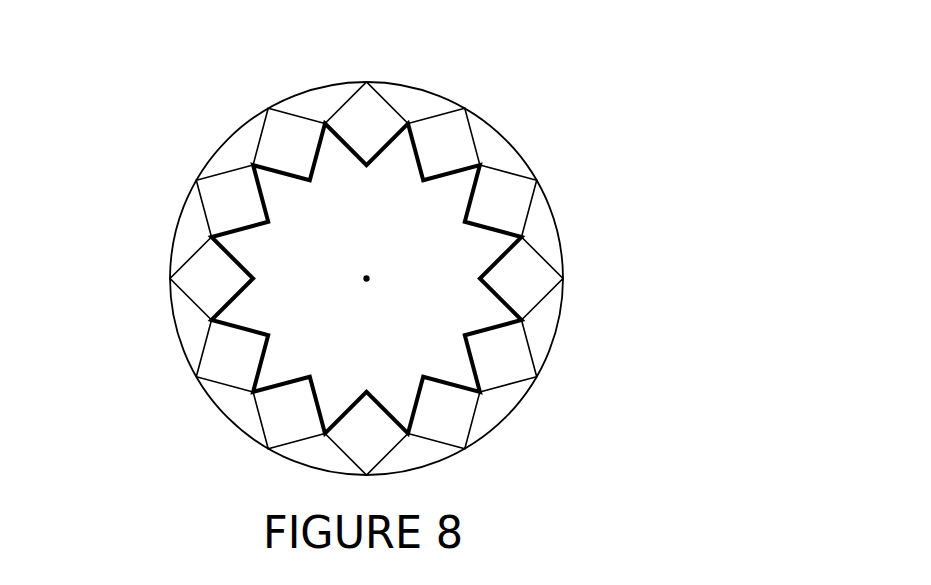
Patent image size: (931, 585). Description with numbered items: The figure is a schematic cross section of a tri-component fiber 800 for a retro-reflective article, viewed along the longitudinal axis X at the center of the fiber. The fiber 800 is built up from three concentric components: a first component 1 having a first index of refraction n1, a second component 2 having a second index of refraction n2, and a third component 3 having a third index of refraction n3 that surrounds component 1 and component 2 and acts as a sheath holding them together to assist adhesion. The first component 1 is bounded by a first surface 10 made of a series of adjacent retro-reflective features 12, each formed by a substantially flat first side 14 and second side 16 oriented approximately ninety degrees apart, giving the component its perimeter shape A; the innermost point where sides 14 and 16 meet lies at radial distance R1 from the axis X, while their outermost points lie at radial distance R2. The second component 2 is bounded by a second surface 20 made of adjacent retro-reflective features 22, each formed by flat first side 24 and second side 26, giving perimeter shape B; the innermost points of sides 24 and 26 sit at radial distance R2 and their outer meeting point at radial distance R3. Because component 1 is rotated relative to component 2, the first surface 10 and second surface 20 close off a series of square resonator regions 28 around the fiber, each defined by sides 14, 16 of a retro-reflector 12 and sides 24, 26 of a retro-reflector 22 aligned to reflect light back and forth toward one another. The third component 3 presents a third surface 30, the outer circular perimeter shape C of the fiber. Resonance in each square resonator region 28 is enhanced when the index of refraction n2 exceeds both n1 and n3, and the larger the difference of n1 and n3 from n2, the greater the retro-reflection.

The tri-component fiber 800 is at (165, 55).
The first component 1 is at (283, 182).
The first surface 10 is at (265, 155).
The second component 2 is at (240, 182).
The second surface 20 is at (212, 173).
The third component 3 is at (182, 237).
The third surface 30 is at (168, 250).
The retro-reflective feature 12 is at (403, 158).
The retro-reflective feature 22 is at (420, 112).
The first side 24 is at (440, 117).
The second side 26 is at (467, 131).
The square resonator region 28 is at (467, 148).
The first side 14 is at (419, 167).
The second side 16 is at (434, 176).
The perimeter shape A is at (225, 328).
The perimeter shape B is at (228, 386).
The perimeter shape C is at (243, 438).
The longitudinal axis X is at (366, 308).
The radial distance R1 is at (366, 278).
The radial distance R2 is at (366, 278).
The radial distance R3 is at (366, 278).
The first index of refraction n1 is at (291, 202).
The second index of refraction n2 is at (234, 203).
The third index of refraction n3 is at (196, 220).